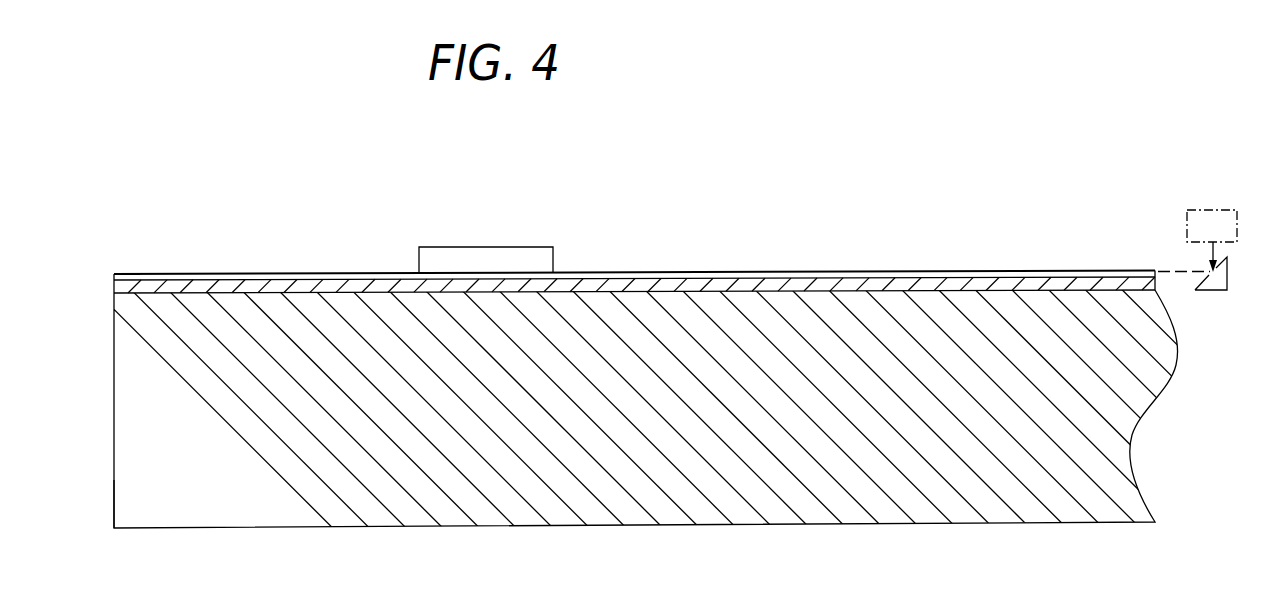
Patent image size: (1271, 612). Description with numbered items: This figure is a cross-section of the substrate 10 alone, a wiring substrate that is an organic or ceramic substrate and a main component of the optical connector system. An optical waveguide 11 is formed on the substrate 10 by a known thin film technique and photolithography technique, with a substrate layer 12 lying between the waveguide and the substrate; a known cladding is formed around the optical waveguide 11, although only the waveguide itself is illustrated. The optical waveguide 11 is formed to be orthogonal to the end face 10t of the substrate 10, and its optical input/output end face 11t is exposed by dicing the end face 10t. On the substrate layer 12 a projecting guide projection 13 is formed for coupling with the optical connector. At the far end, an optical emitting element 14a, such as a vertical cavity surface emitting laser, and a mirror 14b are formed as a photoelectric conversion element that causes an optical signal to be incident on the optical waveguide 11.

The substrate 10 is at (680, 345).
The end face of the substrate 10t is at (116, 490).
The optical waveguide 11 is at (628, 230).
The end face of the optical waveguide 11t is at (112, 277).
The substrate layer 12 is at (845, 282).
The guide projection 13 is at (532, 255).
The optical emitting element 14a is at (1197, 216).
The mirror 14b is at (1215, 287).